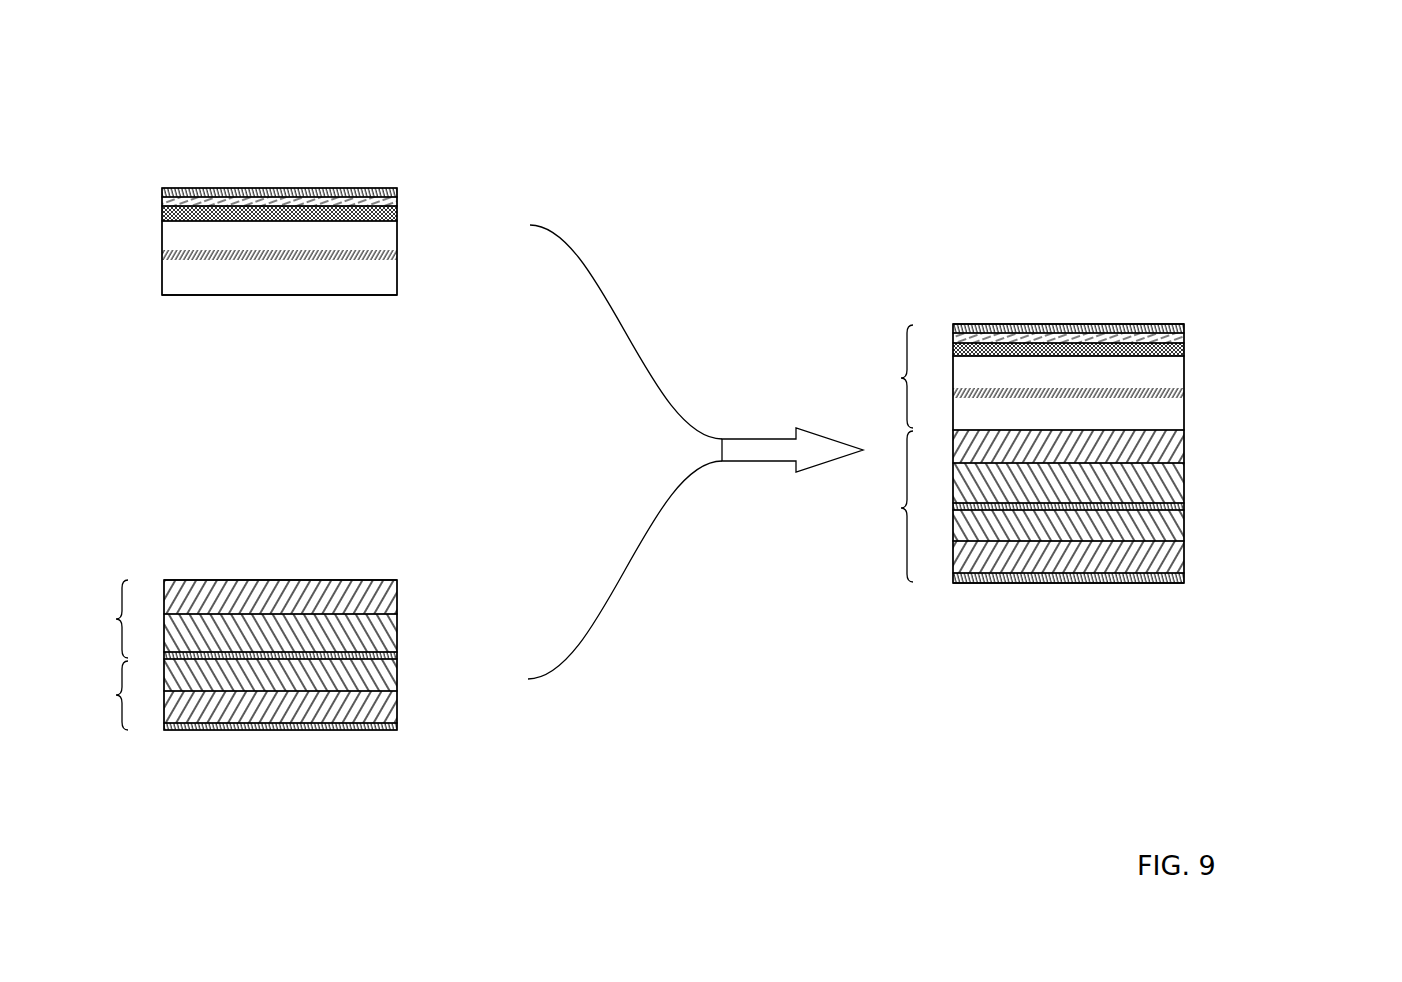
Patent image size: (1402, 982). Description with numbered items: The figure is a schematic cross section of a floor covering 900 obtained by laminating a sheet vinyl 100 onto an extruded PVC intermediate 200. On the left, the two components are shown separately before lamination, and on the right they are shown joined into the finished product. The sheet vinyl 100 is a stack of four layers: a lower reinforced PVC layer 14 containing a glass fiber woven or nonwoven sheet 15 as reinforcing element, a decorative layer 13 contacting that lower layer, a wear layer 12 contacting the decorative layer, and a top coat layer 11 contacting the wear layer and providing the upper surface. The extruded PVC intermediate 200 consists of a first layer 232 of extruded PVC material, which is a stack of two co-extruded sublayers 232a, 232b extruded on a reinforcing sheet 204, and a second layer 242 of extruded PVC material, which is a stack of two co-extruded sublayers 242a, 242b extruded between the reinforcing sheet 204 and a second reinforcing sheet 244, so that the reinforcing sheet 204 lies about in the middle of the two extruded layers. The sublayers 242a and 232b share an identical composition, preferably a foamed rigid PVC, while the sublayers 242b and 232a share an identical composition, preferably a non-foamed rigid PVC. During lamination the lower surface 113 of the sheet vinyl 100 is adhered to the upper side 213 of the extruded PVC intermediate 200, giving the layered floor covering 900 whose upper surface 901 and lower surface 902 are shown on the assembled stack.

The sheet vinyl 100 is at (211, 150).
The top coat layer 11 is at (397, 188).
The wear layer 12 is at (397, 197).
The decorative layer 13 is at (397, 213).
The lower reinforced PVC layer 14 is at (385, 289).
The glass fiber woven or nonwoven sheet 15 is at (397, 258).
The lower surface of the sheet vinyl 113 is at (211, 325).
The extruded PVC intermediate 200 is at (213, 765).
The upper side of the extruded PVC intermediate 213 is at (208, 540).
The first layer of extruded PVC material 232 is at (99, 619).
The sublayer 232a is at (380, 592).
The sublayer 232b is at (380, 632).
The reinforcing sheet 204 is at (397, 656).
The second layer of extruded PVC material 242 is at (102, 695).
The sublayer 242a is at (380, 675).
The sublayer 242b is at (380, 703).
The second reinforcing sheet 244 is at (397, 727).
The floor covering 900 is at (1323, 449).
The top surface of laminated body 901 is at (1071, 280).
The bottom surface of laminated body 902 is at (1058, 634).